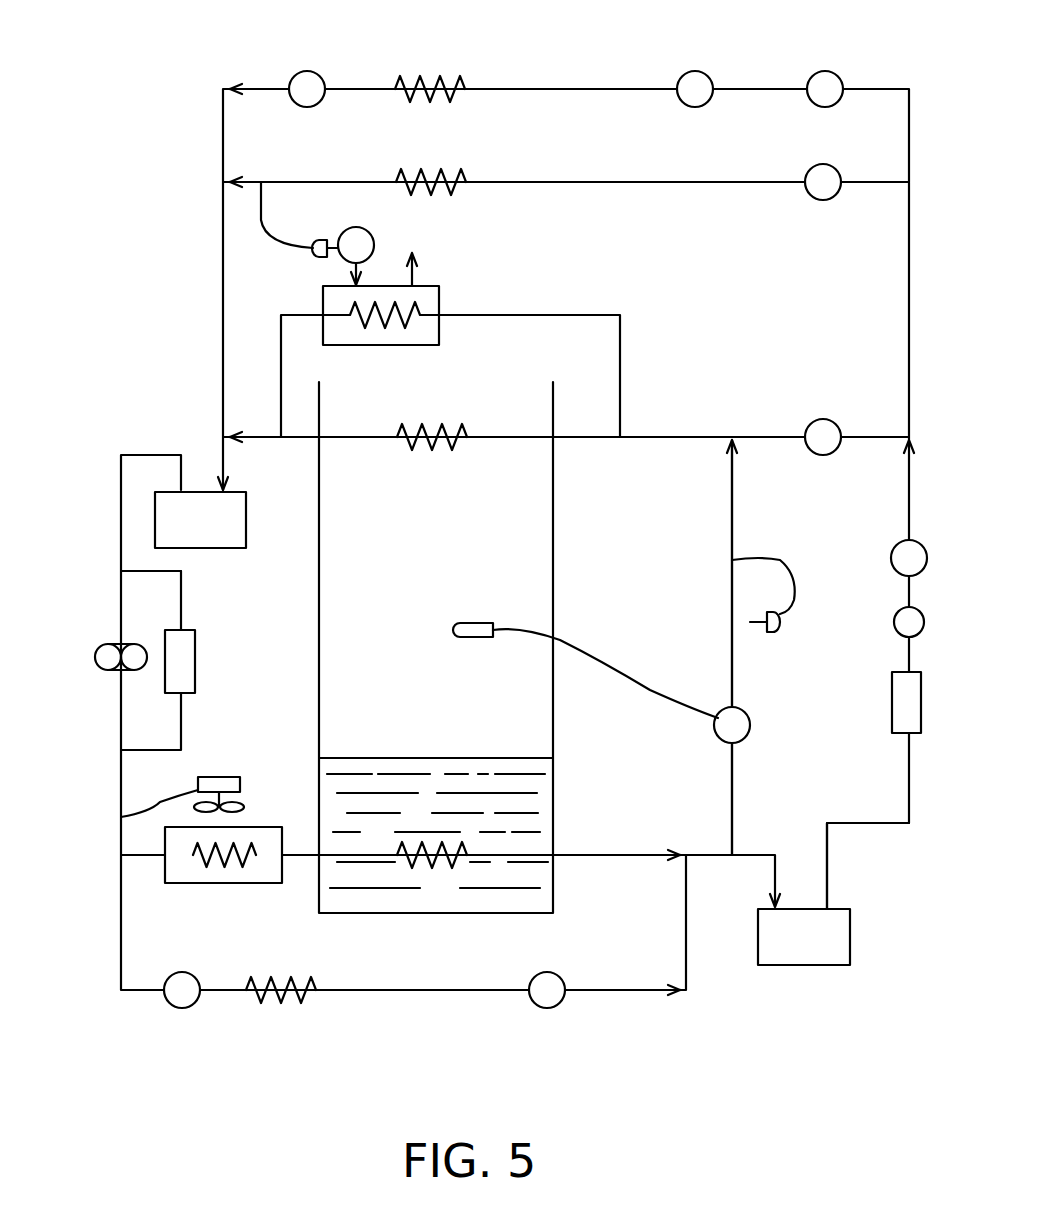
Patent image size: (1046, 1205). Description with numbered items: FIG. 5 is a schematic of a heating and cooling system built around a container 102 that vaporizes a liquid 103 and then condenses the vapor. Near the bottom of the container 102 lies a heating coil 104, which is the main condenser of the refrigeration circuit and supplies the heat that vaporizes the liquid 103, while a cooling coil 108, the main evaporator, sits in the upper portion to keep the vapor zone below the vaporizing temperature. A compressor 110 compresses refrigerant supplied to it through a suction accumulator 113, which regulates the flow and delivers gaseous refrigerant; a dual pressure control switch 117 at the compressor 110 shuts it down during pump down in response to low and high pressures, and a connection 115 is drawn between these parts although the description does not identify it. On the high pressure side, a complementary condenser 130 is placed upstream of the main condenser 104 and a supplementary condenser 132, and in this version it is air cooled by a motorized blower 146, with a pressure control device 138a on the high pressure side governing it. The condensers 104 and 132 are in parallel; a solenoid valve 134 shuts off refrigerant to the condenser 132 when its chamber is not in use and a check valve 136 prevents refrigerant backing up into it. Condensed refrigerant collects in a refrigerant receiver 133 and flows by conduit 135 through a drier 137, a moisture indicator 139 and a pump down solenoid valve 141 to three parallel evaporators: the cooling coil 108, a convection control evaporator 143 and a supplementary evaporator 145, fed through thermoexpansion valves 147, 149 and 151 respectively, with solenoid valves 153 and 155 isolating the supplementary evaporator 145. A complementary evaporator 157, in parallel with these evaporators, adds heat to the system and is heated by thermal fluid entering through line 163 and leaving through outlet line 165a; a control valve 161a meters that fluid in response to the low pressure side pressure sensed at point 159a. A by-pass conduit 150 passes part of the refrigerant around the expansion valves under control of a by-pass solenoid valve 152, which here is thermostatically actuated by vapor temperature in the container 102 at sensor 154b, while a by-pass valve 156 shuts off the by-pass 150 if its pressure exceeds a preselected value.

The container 102 is at (555, 768).
The liquid 103 is at (525, 826).
The heating coil 104 is at (440, 862).
The cooling coil 108 is at (450, 450).
The compressor 110 is at (108, 672).
The suction accumulator 113 is at (246, 524).
The connecting line 115 is at (170, 571).
The dual pressure control switch 117 is at (195, 655).
The complementary condenser 130 is at (305, 812).
The supplementary condenser 132 is at (290, 1006).
The refrigerant receiver 133 is at (808, 966).
The solenoid valve 134 is at (185, 1008).
The conduit 135 is at (870, 825).
The check valve 136 is at (555, 1008).
The drier 137 is at (892, 705).
The pressure control device 138a is at (121, 817).
The moisture indicator 139 is at (893, 618).
The pump down solenoid valve 141 is at (890, 562).
The convection control evaporator 143 is at (445, 176).
The supplementary evaporator 145 is at (415, 80).
The motorized blower 146 is at (222, 778).
The thermoexpansion valve 147 is at (812, 421).
The thermoexpansion valve 149 is at (812, 167).
The by-pass conduit 150 is at (735, 803).
The thermoexpansion valve 151 is at (688, 72).
The by-pass solenoid valve 152 is at (750, 728).
The solenoid valve 153 is at (830, 72).
The thermostatic actuated control 154b is at (470, 623).
The solenoid valve 155 is at (312, 72).
The by-pass valve 156 is at (768, 636).
The complementary evaporator 157 is at (440, 300).
The low pressure side pressure control 159a is at (261, 180).
The control valve 161a is at (318, 258).
The inlet water line 163 is at (362, 276).
The outlet line 165a is at (420, 272).